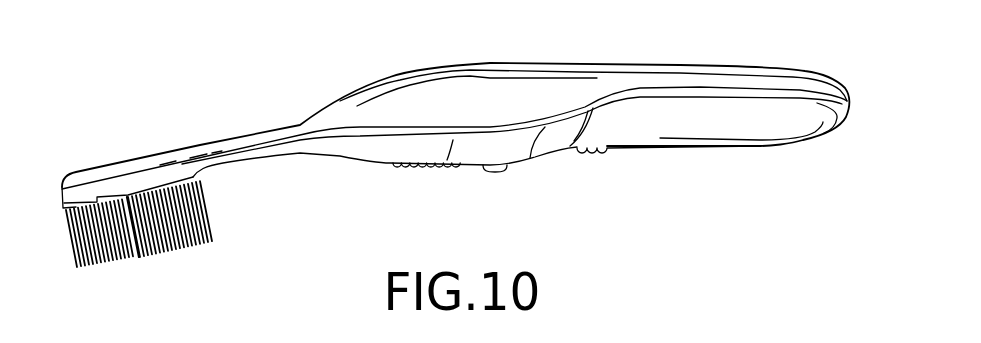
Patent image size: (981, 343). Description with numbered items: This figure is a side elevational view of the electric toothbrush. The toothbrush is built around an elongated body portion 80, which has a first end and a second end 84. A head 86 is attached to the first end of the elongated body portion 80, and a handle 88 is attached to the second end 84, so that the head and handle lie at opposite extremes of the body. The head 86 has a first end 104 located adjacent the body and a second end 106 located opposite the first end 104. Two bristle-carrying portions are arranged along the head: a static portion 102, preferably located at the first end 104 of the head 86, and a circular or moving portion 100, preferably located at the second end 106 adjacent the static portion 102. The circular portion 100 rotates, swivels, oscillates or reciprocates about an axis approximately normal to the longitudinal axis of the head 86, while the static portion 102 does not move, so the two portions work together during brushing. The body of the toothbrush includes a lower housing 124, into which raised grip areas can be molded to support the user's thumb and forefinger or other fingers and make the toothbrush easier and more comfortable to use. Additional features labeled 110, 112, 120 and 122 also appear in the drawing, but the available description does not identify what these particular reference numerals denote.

The elongated body portion 80 is at (404, 92).
The second end 84 is at (803, 127).
The head 86 is at (147, 160).
The handle 88 is at (692, 118).
The circular or moving portion 100 is at (112, 258).
The static portion 102 is at (158, 258).
The first end 104 is at (213, 162).
The second end 106 is at (88, 178).
The bristle tufts 110 is at (73, 215).
The bristle tufts 112 is at (203, 215).
The neck 120 is at (297, 147).
The handle 122 is at (492, 70).
The lower housing 124 is at (383, 153).